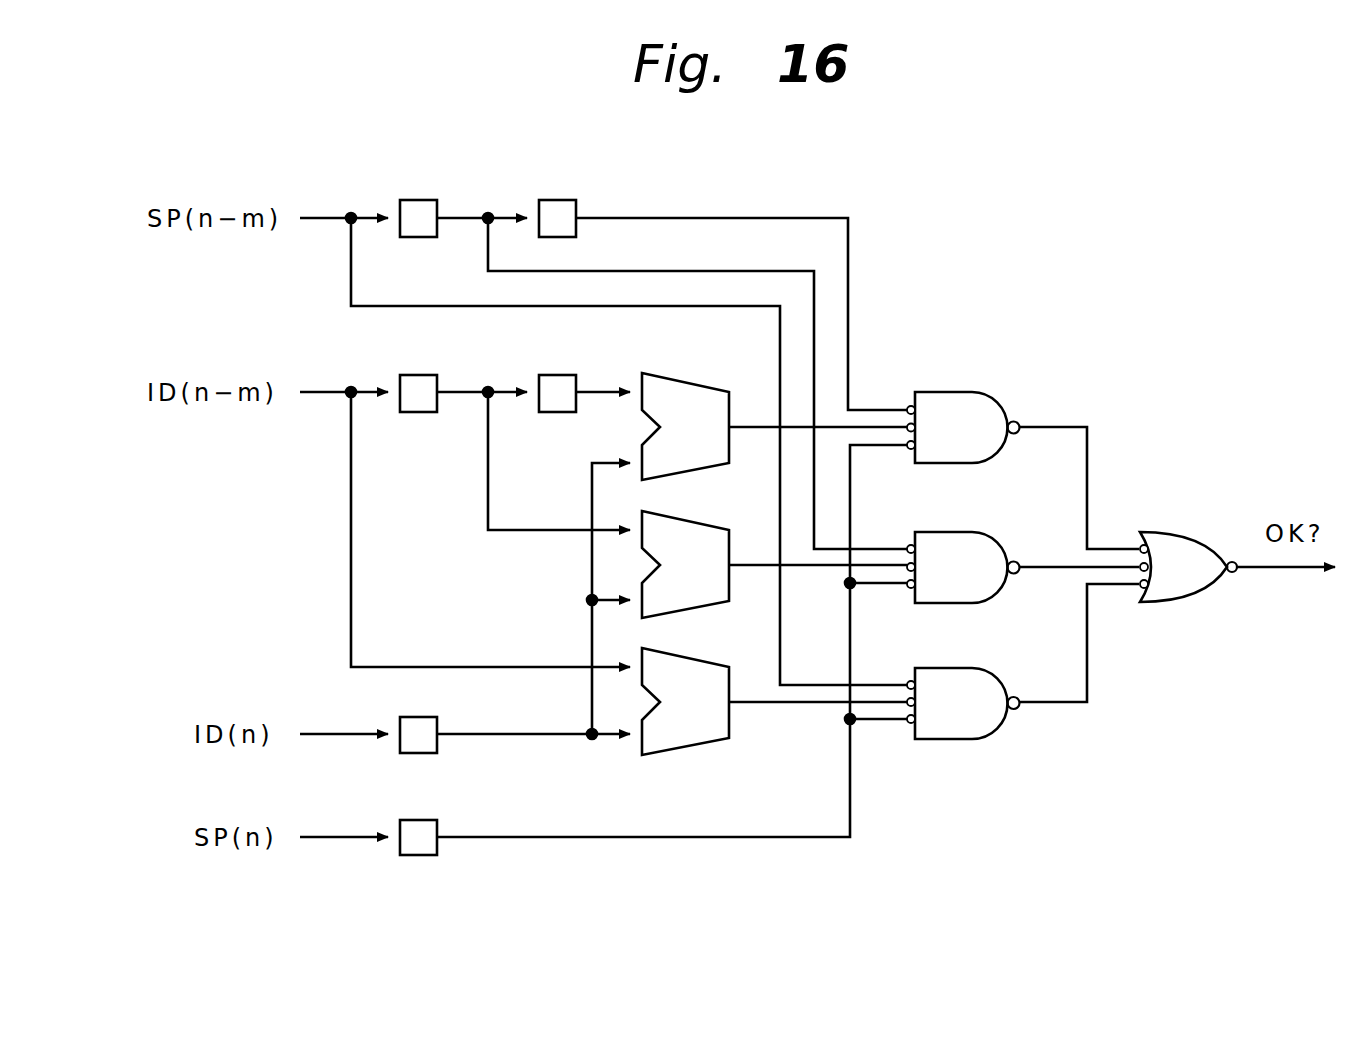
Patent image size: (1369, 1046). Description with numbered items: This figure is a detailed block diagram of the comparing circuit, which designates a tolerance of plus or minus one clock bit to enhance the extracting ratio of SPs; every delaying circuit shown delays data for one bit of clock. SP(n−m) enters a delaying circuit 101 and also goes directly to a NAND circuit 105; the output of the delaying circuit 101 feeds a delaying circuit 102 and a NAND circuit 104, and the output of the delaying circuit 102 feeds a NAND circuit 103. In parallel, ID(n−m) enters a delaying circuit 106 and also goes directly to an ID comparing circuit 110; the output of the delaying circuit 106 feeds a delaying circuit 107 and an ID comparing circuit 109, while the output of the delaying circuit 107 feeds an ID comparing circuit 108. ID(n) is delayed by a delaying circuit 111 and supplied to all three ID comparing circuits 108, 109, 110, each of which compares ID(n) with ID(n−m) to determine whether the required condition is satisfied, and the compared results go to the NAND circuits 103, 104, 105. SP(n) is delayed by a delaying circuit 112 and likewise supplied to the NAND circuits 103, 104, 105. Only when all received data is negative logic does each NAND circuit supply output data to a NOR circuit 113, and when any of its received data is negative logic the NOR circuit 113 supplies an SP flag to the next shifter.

The delaying circuit 101 is at (419, 200).
The delaying circuit 102 is at (558, 200).
The NAND circuit 103 is at (951, 390).
The NAND circuit 104 is at (951, 530).
The NAND circuit 105 is at (950, 740).
The delaying circuit 106 is at (418, 412).
The delaying circuit 107 is at (557, 412).
The ID comparing circuit 108 is at (680, 380).
The ID comparing circuit 109 is at (687, 524).
The ID comparing circuit 110 is at (683, 658).
The delaying circuit 111 is at (418, 753).
The delaying circuit 112 is at (418, 855).
The NOR circuit 113 is at (1168, 531).